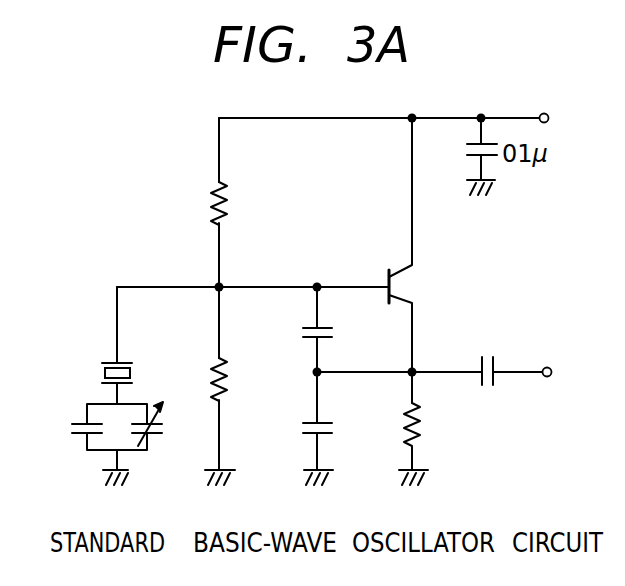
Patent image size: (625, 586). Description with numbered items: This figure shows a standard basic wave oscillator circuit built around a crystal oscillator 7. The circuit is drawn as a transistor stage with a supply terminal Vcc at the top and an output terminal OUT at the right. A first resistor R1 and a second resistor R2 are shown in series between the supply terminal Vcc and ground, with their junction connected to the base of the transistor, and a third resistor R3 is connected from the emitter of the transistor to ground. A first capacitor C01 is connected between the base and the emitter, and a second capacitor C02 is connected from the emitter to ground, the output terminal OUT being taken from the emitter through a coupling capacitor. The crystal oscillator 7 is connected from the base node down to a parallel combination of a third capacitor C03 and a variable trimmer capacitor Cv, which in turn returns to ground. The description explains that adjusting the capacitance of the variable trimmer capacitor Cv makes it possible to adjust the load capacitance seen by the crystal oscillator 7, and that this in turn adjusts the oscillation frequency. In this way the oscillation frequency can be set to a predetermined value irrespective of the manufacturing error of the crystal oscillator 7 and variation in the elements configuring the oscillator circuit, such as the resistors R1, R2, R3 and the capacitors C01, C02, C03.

The crystal oscillator 7 is at (100, 373).
The bias resistor R1 is at (237, 202).
The bias resistor R2 is at (239, 378).
The emitter resistor R3 is at (432, 421).
The feedback capacitor C01 is at (340, 329).
The feedback capacitor C02 is at (340, 421).
The load capacitor C03 is at (67, 430).
The variable trimmer capacitor Cv is at (164, 424).
The supply voltage terminal Vcc is at (569, 119).
The output terminal OUT is at (578, 373).